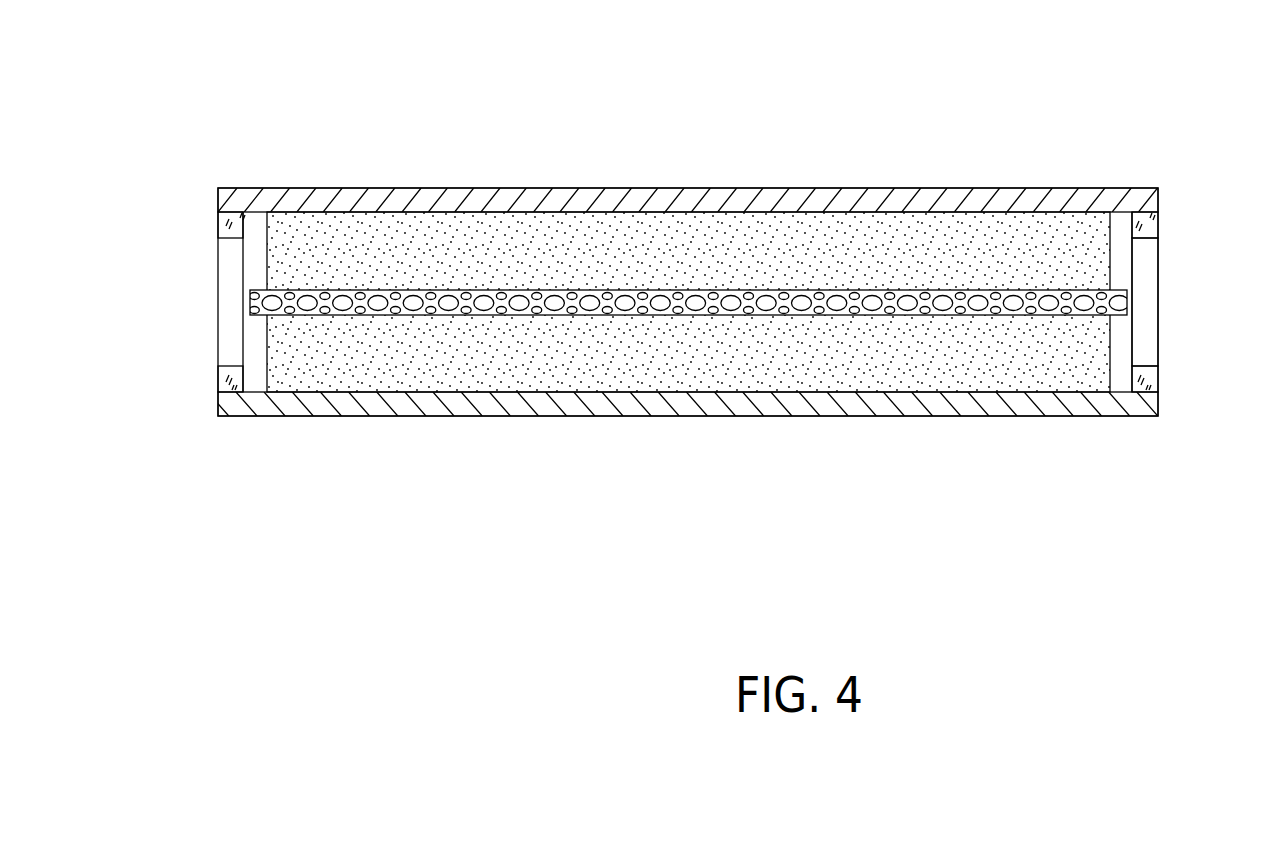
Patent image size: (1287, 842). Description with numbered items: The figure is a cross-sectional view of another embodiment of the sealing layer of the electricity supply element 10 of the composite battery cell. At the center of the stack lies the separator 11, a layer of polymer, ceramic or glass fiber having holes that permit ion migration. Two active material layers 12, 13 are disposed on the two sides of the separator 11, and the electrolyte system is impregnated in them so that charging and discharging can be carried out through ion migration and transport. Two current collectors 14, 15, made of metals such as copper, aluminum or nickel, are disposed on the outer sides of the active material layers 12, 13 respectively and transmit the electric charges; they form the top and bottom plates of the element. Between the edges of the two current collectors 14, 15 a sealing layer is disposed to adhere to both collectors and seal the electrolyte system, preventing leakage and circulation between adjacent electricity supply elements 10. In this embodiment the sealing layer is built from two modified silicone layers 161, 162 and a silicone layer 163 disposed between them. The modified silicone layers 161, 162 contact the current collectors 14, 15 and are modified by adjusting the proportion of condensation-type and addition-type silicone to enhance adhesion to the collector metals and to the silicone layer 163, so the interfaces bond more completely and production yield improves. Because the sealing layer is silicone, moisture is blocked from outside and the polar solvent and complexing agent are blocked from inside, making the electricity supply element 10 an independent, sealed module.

The electricity supply element 10 is at (284, 88).
The separator 11 is at (250, 301).
The active material layer 12 is at (267, 249).
The active material layer 13 is at (267, 360).
The current collector 14 is at (236, 188).
The current collector 15 is at (240, 416).
The modified silicone layer 161 is at (1158, 224).
The modified silicone layer 162 is at (1158, 378).
The silicone layer 163 is at (1158, 303).